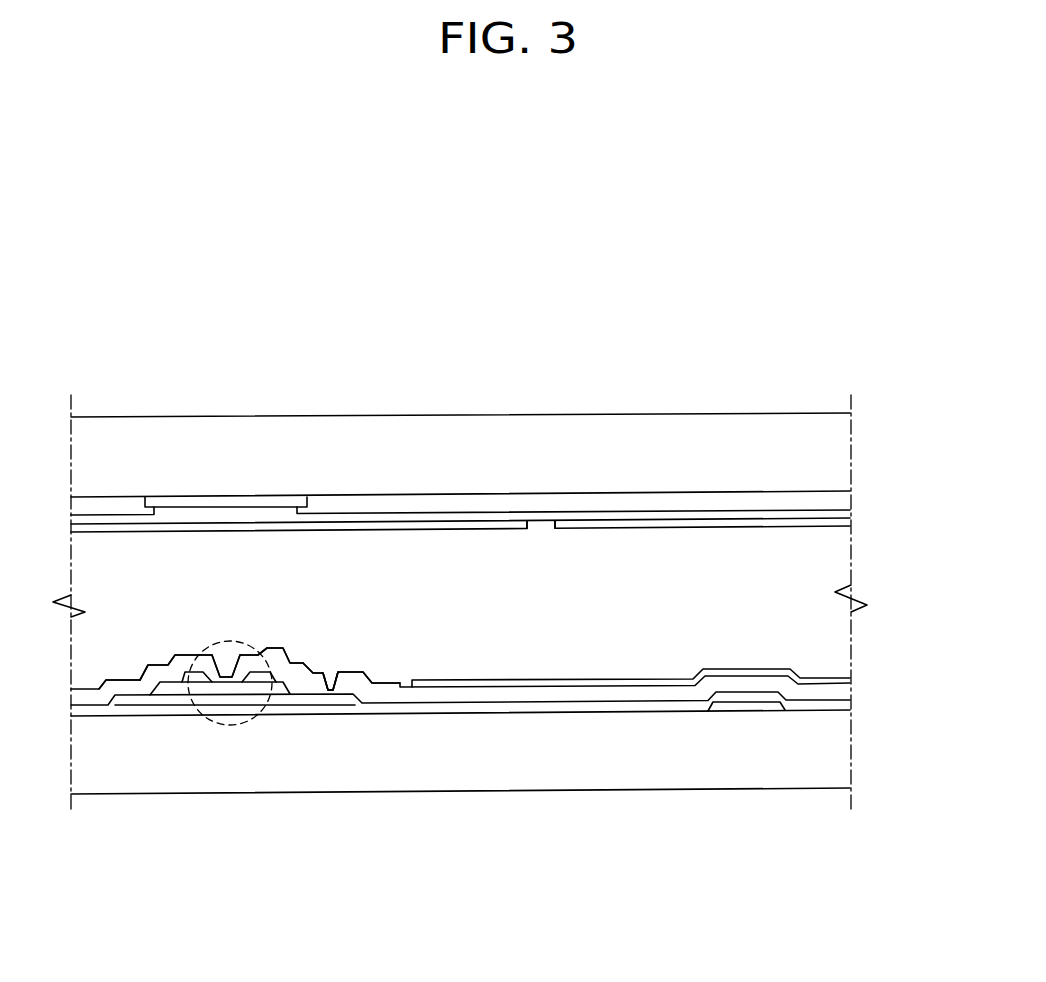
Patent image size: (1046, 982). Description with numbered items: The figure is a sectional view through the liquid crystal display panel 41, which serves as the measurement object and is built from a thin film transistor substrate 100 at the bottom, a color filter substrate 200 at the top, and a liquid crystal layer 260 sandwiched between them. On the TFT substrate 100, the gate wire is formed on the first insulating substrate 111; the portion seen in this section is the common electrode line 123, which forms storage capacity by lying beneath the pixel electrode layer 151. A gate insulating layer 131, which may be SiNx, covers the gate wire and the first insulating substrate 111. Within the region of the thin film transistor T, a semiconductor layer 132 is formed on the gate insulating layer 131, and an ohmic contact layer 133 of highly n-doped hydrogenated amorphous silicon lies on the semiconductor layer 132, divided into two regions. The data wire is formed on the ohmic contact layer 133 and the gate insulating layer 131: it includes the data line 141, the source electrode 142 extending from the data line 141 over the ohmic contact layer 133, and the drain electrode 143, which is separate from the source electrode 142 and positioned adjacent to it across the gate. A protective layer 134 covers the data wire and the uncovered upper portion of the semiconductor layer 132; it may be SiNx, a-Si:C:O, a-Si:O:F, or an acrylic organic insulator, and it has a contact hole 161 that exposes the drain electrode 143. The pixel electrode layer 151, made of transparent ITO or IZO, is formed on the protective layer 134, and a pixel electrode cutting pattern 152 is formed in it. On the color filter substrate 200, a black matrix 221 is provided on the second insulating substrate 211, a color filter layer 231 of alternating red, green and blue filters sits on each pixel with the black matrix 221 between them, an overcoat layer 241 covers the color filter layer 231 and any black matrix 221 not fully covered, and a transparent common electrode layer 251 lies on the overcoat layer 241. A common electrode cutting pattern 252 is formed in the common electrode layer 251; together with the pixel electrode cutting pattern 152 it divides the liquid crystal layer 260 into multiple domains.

The liquid crystal display panel 41 is at (273, 325).
The thin film transistor substrate 100 is at (403, 862).
The first insulating substrate 111 is at (848, 753).
The common electrode line 123 is at (748, 706).
The gate insulating layer 131 is at (849, 705).
The semiconductor layer 132 is at (262, 700).
The ohmic contact layer 133 is at (292, 695).
The protective layer 134 is at (849, 690).
The data line 141 is at (122, 703).
The source electrode 142 is at (170, 688).
The drain electrode 143 is at (260, 652).
The pixel electrode layer 151 is at (599, 679).
The pixel electrode cutting pattern 152 is at (405, 676).
The contact hole 161 is at (335, 668).
The thin film transistor T is at (223, 726).
The color filter substrate 200 is at (495, 387).
The second insulating substrate 211 is at (849, 445).
The black matrix 221 is at (258, 500).
The color filter layer 231 is at (849, 497).
The overcoat layer 241 is at (178, 512).
The common electrode layer 251 is at (849, 525).
The common electrode cutting pattern 252 is at (543, 530).
The liquid crystal layer 260 is at (847, 625).